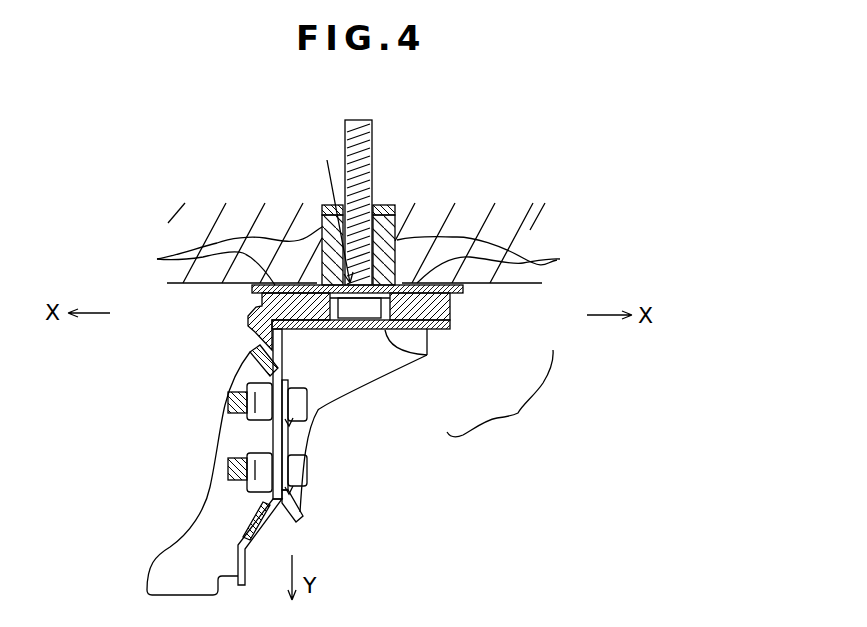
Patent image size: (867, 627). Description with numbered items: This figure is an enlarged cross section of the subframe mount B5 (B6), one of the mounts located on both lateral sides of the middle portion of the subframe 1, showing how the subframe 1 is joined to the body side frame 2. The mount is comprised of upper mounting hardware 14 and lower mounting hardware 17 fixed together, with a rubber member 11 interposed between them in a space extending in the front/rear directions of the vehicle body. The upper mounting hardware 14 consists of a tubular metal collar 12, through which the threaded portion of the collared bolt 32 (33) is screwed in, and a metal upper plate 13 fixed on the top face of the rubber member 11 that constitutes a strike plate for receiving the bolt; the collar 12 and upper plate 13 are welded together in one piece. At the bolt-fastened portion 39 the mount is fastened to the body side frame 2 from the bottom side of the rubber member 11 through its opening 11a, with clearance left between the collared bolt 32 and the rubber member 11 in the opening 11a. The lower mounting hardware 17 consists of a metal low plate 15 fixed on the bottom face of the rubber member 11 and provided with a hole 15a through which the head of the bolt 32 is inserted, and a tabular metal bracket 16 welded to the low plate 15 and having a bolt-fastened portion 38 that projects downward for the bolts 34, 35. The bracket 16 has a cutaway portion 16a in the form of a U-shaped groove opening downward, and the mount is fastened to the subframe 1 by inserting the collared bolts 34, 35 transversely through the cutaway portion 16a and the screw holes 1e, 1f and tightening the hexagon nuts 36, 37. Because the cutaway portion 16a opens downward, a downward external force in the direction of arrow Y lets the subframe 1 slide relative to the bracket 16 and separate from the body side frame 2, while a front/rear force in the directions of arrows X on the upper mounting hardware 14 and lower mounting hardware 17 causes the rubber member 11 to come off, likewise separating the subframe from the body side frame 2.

The subframe 1 is at (151, 534).
The screw hole 1e is at (270, 397).
The screw hole 1f is at (248, 480).
The body side frame 2 is at (528, 222).
The rubber member 11 is at (260, 300).
The opening 11a is at (270, 332).
The tubular metal collar 12 is at (322, 230).
The upper plate 13 is at (463, 292).
The upper mounting hardware 14 is at (357, 256).
The low plate 15 is at (450, 329).
The hole 15a is at (430, 351).
The tabular metal bracket 16 is at (385, 355).
The cutaway portion 16a is at (292, 445).
The lower mounting hardware 17 is at (501, 394).
The collared bolt 32 is at (372, 130).
The bolt 33 is at (358, 202).
The collared bolt 34 is at (307, 412).
The collared bolt 35 is at (307, 470).
The hexagon nut 36 is at (257, 425).
The hexagon nut 37 is at (253, 452).
The bolt-fastened portion 38 is at (290, 425).
The bolt-fastened portion 39 is at (325, 214).
The subframe mount B5 is at (148, 159).
The subframe mount B6 is at (187, 189).